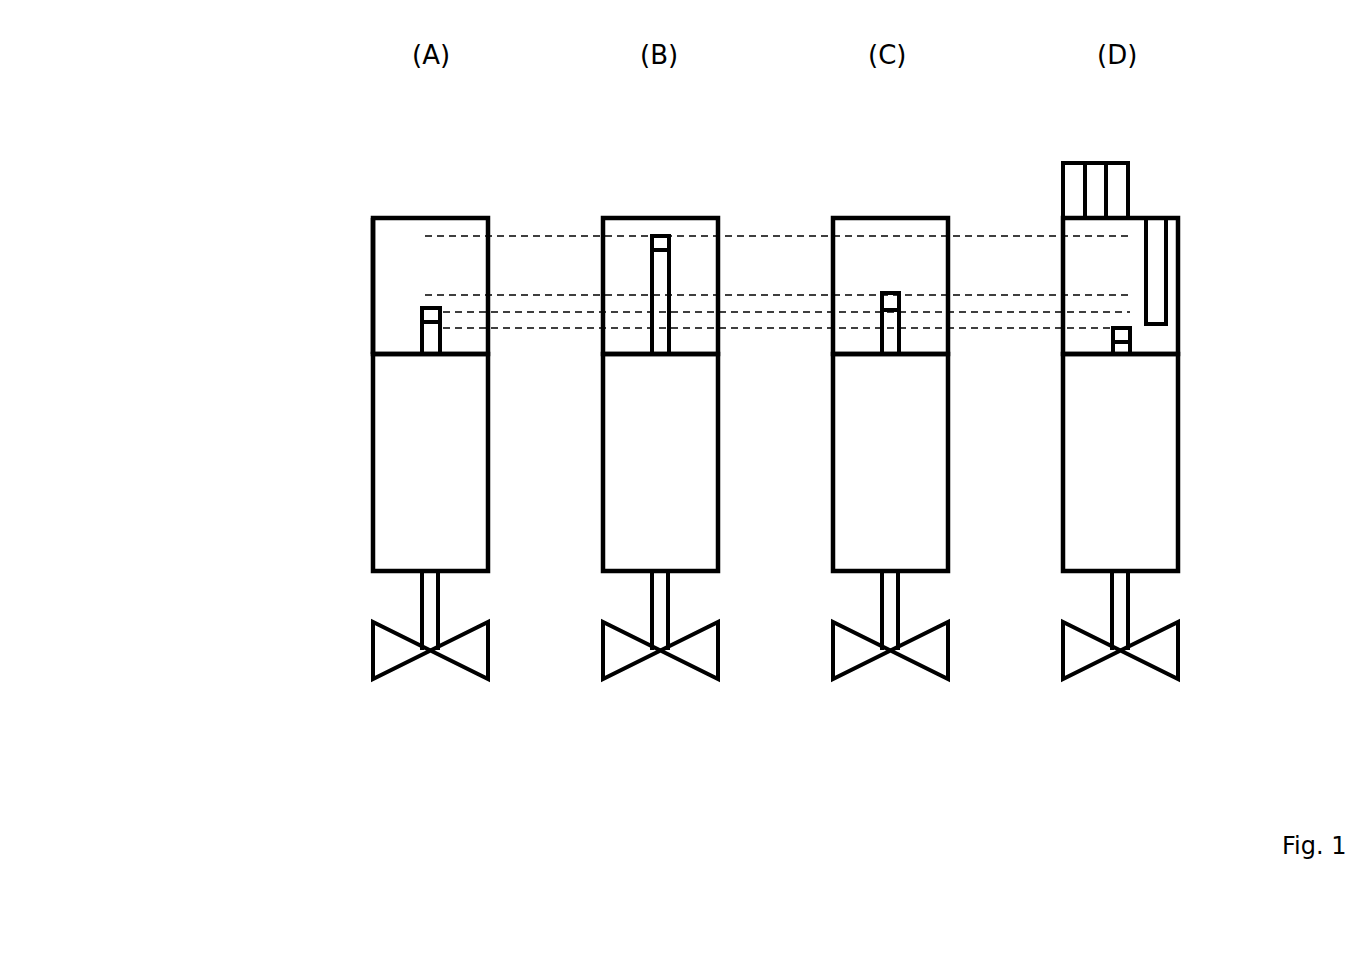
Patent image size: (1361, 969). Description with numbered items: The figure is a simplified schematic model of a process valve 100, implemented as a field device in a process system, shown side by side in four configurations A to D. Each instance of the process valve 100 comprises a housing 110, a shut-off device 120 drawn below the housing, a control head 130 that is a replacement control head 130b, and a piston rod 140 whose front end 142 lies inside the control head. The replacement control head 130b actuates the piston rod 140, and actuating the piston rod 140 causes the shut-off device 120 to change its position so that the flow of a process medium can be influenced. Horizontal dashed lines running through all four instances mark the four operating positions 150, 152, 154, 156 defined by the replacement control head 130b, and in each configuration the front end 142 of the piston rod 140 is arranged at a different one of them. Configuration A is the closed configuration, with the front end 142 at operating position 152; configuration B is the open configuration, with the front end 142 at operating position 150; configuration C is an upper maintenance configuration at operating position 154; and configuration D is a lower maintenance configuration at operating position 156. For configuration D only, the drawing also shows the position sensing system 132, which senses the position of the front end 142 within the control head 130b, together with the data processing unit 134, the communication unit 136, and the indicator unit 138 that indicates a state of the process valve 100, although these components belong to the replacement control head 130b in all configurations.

The process valve 100 is at (357, 494).
The housing 110 is at (373, 484).
The shut-off device 120 is at (470, 672).
The control head 130 is at (432, 218).
The replacement control head 130b is at (372, 238).
The position sensing system 132 is at (1157, 275).
The data processing unit 134 is at (1075, 170).
The communication unit 136 is at (1100, 170).
The indicator unit 138 is at (1120, 202).
The piston rod 140 is at (430, 338).
The front end 142 is at (424, 316).
The operating position 150 is at (520, 238).
The operating position 152 is at (1017, 312).
The operating position 154 is at (967, 295).
The operating position 156 is at (966, 328).